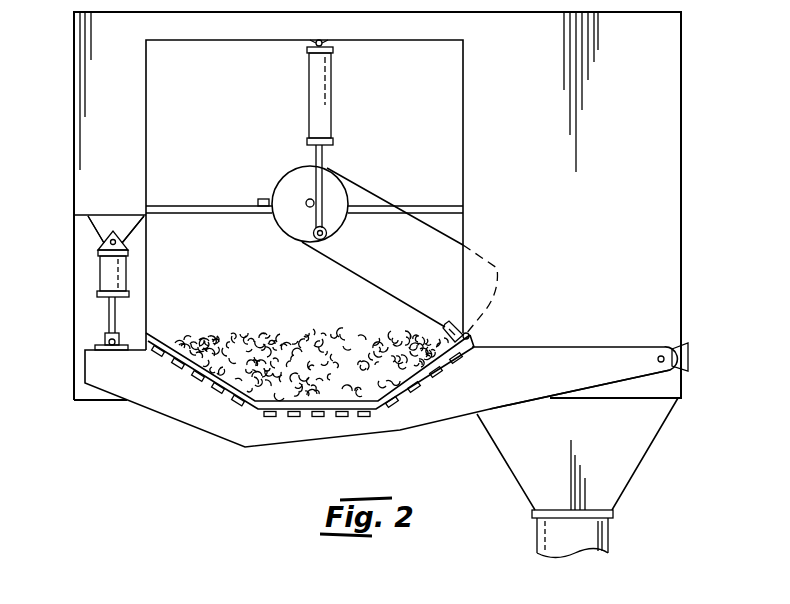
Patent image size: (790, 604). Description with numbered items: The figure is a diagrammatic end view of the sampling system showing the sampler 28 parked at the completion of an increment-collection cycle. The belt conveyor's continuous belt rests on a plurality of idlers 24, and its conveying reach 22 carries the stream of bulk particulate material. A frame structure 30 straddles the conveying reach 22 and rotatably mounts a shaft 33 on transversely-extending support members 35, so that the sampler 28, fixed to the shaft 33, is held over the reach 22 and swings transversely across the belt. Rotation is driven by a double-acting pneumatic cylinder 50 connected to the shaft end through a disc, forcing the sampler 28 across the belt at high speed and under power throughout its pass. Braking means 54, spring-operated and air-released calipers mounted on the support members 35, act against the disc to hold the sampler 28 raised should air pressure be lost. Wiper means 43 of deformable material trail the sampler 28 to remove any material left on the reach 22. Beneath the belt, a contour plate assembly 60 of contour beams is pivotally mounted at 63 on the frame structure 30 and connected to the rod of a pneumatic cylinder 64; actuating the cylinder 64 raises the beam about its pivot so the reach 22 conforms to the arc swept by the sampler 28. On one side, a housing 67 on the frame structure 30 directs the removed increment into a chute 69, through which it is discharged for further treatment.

The conveying reach 22 is at (160, 343).
The idlers 24 is at (332, 416).
The sampler 28 is at (352, 259).
The frame structure 30 is at (88, 222).
The shaft 33 is at (305, 207).
The support members 35 is at (205, 204).
The wiper means 43 is at (478, 322).
The double-acting pneumatic cylinder 50 is at (332, 82).
The braking means 54 is at (262, 198).
The contour plate assembly 60 is at (527, 332).
The pivotal connection 63 is at (660, 355).
The pneumatic cylinder 64 is at (97, 277).
The housing 67 is at (630, 427).
The chute 69 is at (585, 540).